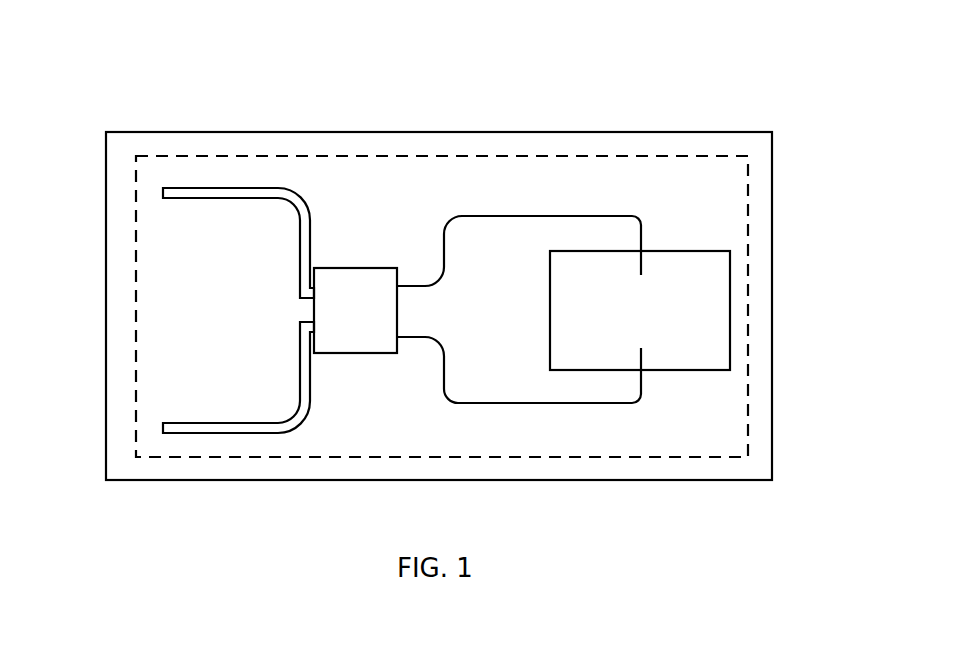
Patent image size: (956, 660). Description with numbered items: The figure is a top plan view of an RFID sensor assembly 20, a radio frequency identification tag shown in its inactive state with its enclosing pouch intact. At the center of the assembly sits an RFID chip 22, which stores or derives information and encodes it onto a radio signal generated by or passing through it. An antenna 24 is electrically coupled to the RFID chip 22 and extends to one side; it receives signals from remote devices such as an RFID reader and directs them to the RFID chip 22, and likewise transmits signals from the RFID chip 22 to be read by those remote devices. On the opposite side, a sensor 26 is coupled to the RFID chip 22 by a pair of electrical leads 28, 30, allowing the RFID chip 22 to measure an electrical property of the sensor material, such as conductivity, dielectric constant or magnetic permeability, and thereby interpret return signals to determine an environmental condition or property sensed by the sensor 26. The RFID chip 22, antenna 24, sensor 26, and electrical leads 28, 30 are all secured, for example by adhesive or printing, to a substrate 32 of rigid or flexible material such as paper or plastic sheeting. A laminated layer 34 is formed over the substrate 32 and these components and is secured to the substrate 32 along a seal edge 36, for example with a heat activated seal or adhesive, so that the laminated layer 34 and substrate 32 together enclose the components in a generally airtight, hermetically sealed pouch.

The RFID sensor assembly 20 is at (440, 309).
The RFID chip 22 is at (357, 292).
The antenna 24 is at (243, 195).
The sensor 26 is at (695, 262).
The electrical lead 28 is at (545, 215).
The electrical lead 30 is at (487, 403).
The substrate 32 is at (360, 425).
The laminated layer 34 is at (185, 251).
The seal edge 36 is at (648, 458).